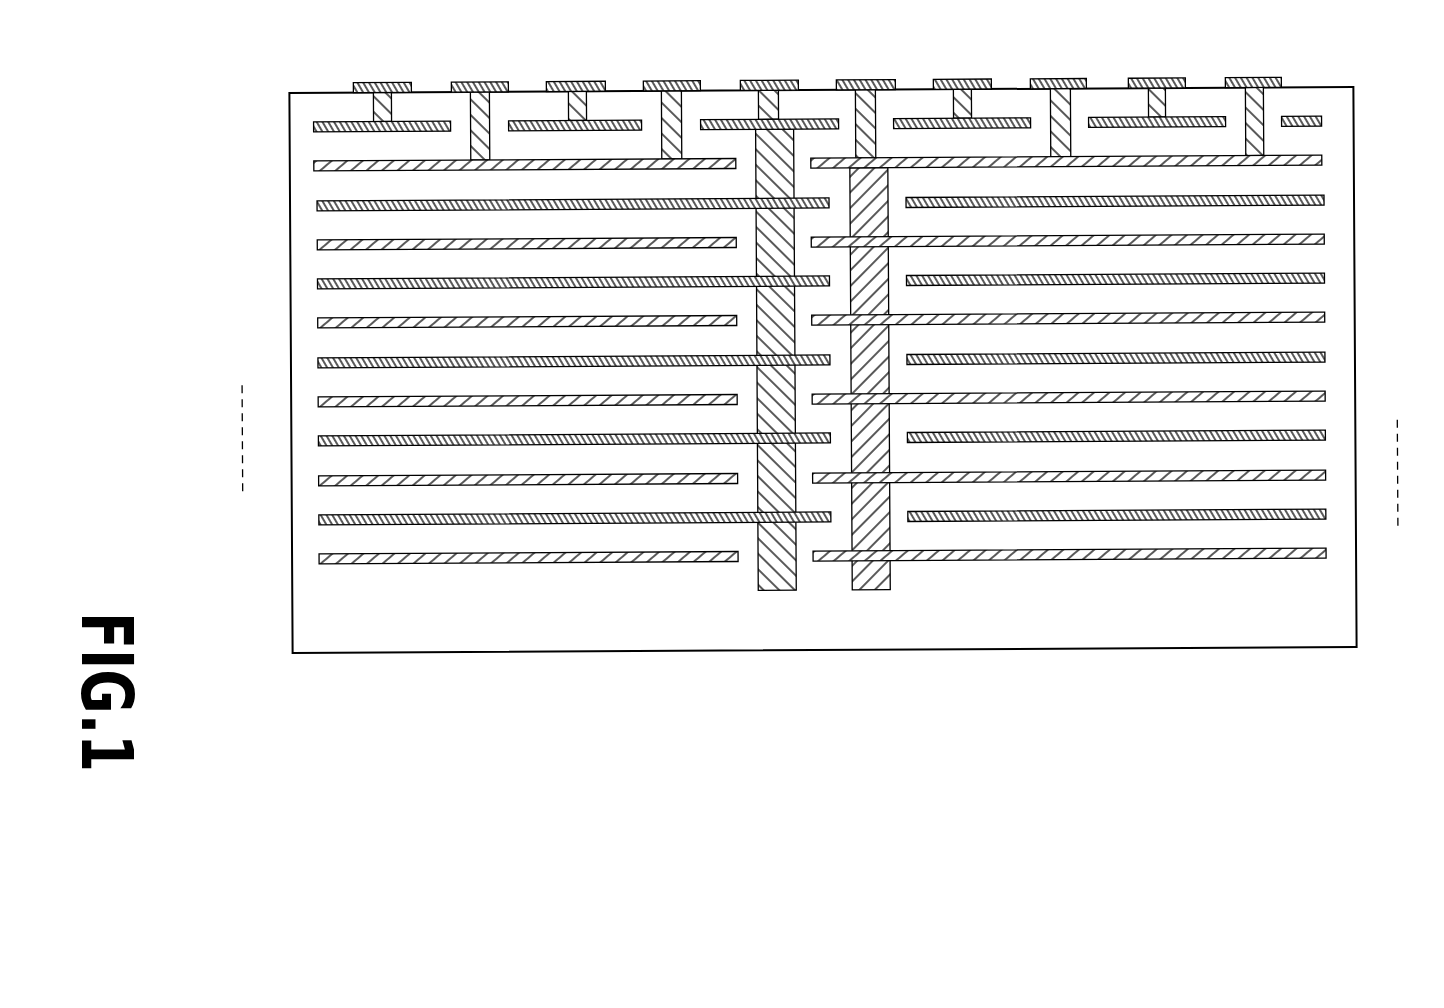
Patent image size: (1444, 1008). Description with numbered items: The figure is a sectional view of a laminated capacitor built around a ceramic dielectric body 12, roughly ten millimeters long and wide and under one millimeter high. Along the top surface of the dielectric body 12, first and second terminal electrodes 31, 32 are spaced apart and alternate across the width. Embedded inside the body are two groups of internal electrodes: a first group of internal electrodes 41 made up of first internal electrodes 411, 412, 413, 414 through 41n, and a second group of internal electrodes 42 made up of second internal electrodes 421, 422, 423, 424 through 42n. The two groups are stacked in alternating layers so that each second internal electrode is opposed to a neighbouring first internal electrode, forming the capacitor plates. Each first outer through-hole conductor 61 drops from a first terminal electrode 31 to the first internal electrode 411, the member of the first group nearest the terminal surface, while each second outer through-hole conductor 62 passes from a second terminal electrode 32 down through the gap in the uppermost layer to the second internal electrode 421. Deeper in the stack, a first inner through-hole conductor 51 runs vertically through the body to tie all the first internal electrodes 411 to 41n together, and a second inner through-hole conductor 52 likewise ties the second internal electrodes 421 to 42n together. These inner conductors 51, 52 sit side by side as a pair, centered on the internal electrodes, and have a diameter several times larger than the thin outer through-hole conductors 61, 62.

The dielectric body 12 is at (1355, 645).
The first terminal electrode 31 is at (378, 80).
The second terminal electrode 32 is at (474, 80).
The first group of internal electrodes 41 is at (323, 115).
The second group of internal electrodes 42 is at (1321, 152).
The first internal electrode 411 is at (316, 124).
The first internal electrode 412 is at (318, 203).
The first internal electrode 413 is at (318, 281).
The first internal electrode 414 is at (318, 360).
The first internal electrode 41n is at (318, 517).
The second internal electrode 421 is at (1324, 163).
The second internal electrode 422 is at (1324, 242).
The second internal electrode 423 is at (1324, 320).
The second internal electrode 424 is at (1324, 399).
The second internal electrode 42n is at (1324, 556).
The first inner through-hole conductor 51 is at (778, 590).
The second inner through-hole conductor 52 is at (870, 590).
The first outer through-hole conductor 61 is at (393, 108).
The second outer through-hole conductor 62 is at (491, 108).